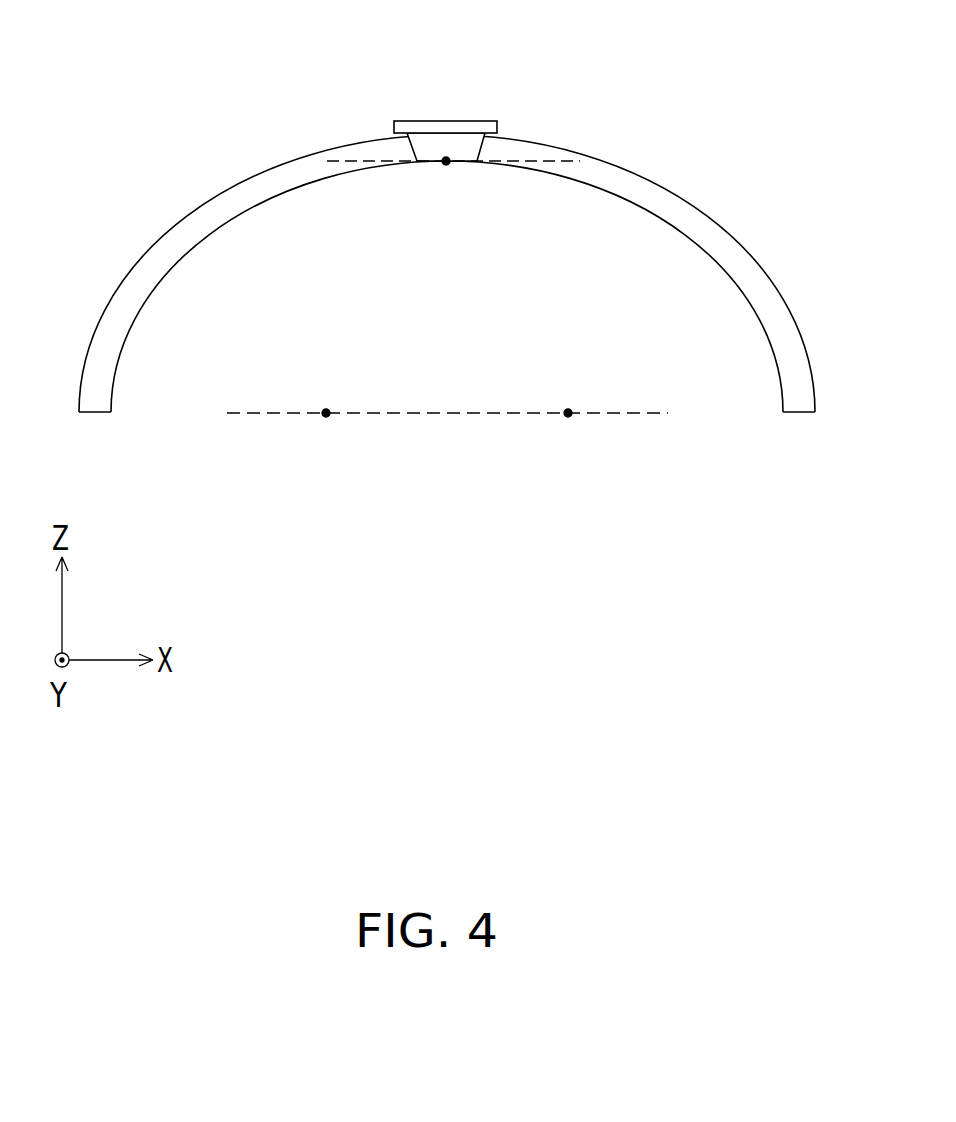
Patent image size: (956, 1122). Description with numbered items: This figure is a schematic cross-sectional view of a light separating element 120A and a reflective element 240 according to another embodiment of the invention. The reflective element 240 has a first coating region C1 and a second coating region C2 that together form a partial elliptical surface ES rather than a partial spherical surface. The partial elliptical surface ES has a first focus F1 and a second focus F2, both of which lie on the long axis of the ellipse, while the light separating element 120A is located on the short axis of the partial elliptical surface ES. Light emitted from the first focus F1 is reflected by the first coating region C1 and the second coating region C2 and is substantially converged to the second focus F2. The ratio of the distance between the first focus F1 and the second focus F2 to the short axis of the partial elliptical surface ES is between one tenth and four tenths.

The reflective element 240 is at (263, 187).
The light separating element 120A is at (450, 127).
The first coating region C1 is at (460, 163).
The second coating region C2 is at (177, 287).
The partial elliptical surface ES is at (734, 141).
The first focus F1 is at (326, 417).
The second focus F2 is at (568, 417).